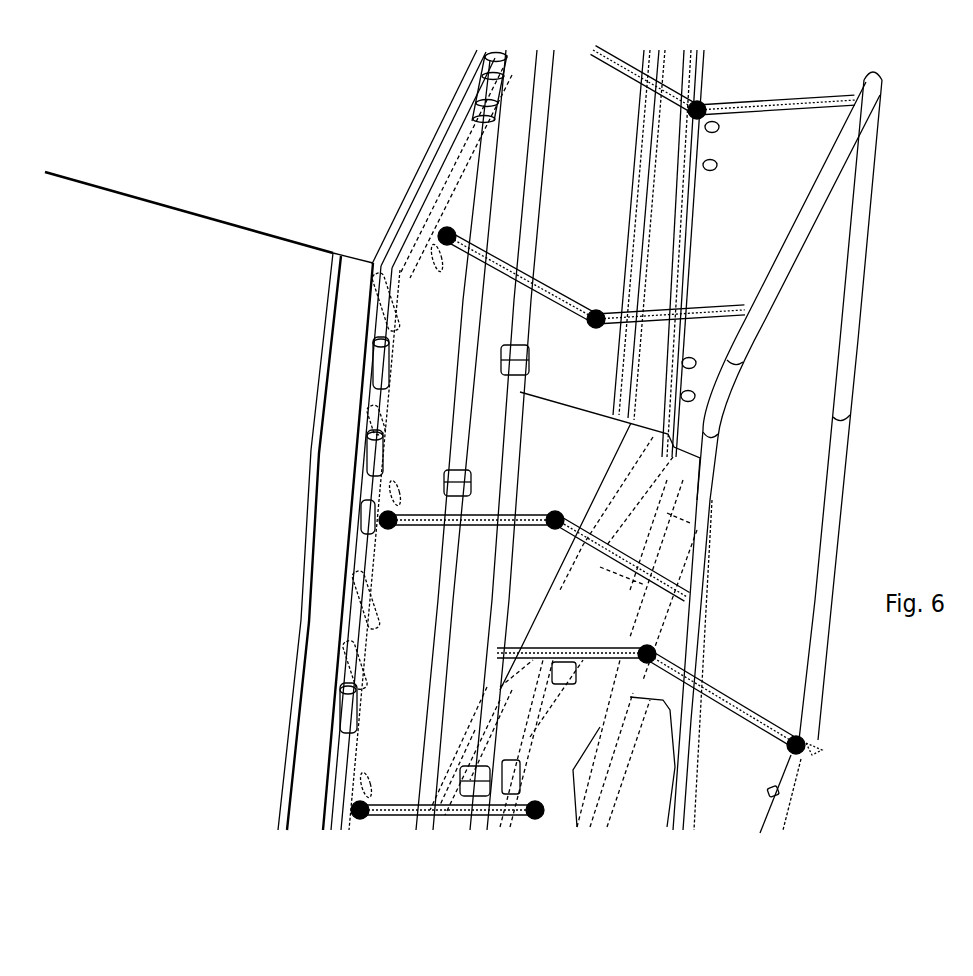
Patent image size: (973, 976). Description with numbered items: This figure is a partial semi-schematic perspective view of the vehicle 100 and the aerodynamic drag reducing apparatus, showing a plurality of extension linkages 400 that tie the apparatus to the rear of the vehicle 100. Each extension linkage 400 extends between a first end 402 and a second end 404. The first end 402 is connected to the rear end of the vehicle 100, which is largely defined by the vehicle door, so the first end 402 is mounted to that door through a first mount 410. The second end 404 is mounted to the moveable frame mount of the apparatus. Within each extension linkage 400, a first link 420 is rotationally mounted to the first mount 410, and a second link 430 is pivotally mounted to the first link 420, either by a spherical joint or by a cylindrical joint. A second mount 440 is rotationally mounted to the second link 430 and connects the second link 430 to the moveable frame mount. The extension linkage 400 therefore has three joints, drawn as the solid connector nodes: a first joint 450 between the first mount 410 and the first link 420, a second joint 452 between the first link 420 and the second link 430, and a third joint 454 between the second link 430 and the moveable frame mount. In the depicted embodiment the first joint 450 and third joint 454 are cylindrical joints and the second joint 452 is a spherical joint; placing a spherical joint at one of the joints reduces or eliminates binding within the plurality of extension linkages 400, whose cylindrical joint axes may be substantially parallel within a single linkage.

The vehicle 100 is at (222, 308).
The extension linkage 400 is at (607, 430).
The first end 402 is at (434, 255).
The second end 404 is at (805, 753).
The first mount 410 is at (437, 254).
The first link 420 is at (547, 290).
The second link 430 is at (727, 318).
The second mount 440 is at (806, 740).
The first joint 450 is at (443, 228).
The second joint 452 is at (596, 328).
The third joint 454 is at (794, 735).